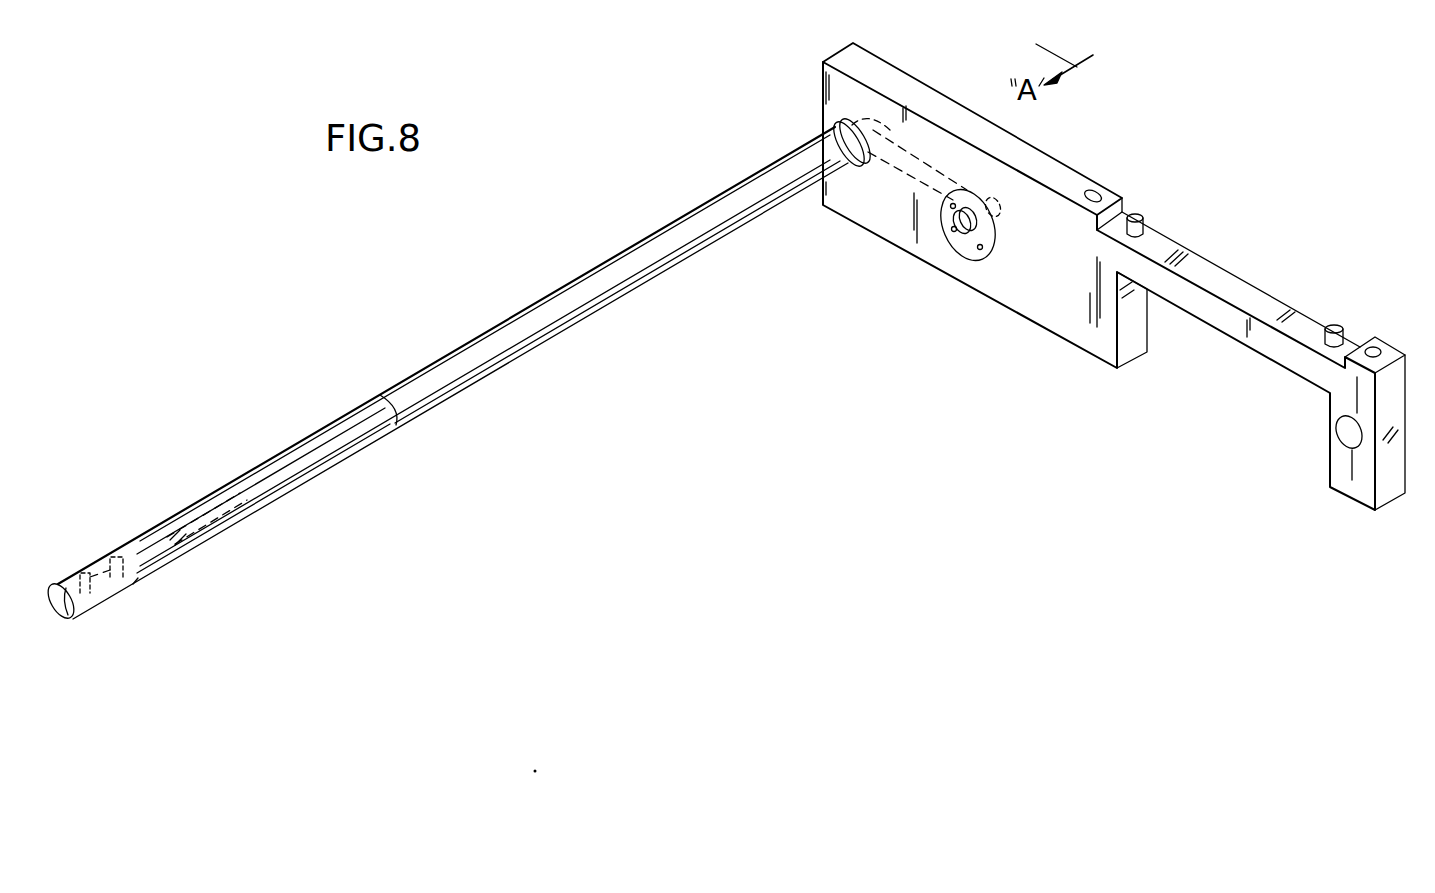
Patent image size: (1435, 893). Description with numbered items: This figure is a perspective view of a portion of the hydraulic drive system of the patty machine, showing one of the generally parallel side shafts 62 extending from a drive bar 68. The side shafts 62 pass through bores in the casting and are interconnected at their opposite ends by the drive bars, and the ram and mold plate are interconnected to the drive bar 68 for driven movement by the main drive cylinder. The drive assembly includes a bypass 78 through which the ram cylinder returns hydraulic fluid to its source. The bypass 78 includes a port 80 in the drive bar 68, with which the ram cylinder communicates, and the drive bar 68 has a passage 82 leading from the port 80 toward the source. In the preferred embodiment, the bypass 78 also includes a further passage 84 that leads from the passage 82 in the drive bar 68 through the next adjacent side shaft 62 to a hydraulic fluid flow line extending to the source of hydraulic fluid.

The drive bar 68 is at (890, 77).
The side shaft 62 is at (598, 298).
The further passage 84 is at (225, 490).
The bypass 78 is at (964, 239).
The port 80 is at (964, 217).
The passage 82 is at (950, 188).